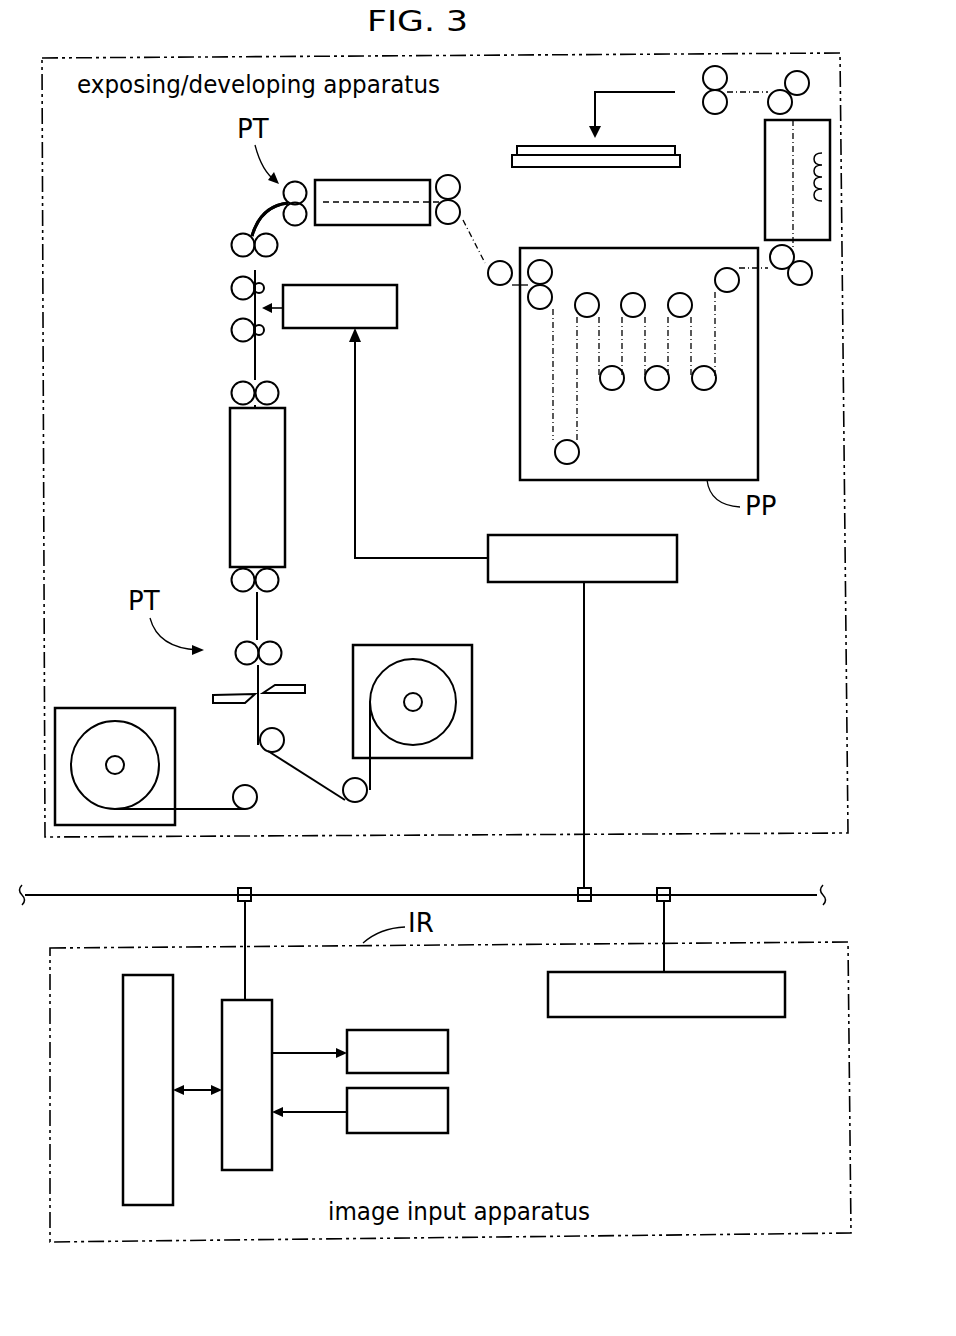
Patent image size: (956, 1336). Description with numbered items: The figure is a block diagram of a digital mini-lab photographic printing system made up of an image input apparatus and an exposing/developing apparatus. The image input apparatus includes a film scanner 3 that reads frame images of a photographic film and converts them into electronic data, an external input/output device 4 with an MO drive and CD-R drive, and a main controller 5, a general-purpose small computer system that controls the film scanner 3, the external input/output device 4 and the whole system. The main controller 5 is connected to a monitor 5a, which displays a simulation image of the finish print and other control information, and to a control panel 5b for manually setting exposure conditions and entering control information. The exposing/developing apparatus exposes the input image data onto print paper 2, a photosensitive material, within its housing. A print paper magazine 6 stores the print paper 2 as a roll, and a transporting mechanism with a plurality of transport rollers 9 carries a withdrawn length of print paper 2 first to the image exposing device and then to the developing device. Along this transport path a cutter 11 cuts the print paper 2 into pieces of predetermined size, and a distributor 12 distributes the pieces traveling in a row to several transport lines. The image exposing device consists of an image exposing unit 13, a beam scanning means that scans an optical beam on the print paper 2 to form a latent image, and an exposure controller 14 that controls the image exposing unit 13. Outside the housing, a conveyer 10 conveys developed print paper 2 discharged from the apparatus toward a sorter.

The print paper 2 is at (263, 214).
The film scanner 3 is at (688, 1017).
The external input/output device 4 is at (143, 1205).
The main controller 5 is at (263, 998).
The monitor 5a is at (450, 1047).
The control panel 5b is at (448, 1117).
The print paper magazine 6 is at (137, 708).
The transport rollers 9 is at (297, 180).
The conveyer 10 is at (538, 143).
The cutter 11 is at (307, 688).
The distributor 12 is at (345, 225).
The image exposing unit 13 is at (385, 330).
The exposure controller 14 is at (613, 582).